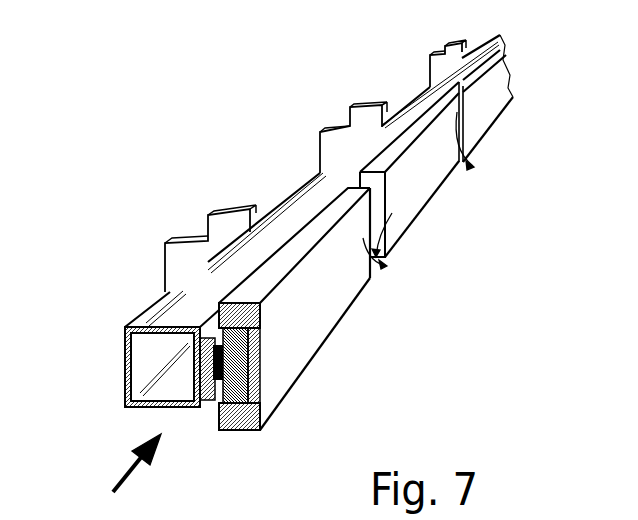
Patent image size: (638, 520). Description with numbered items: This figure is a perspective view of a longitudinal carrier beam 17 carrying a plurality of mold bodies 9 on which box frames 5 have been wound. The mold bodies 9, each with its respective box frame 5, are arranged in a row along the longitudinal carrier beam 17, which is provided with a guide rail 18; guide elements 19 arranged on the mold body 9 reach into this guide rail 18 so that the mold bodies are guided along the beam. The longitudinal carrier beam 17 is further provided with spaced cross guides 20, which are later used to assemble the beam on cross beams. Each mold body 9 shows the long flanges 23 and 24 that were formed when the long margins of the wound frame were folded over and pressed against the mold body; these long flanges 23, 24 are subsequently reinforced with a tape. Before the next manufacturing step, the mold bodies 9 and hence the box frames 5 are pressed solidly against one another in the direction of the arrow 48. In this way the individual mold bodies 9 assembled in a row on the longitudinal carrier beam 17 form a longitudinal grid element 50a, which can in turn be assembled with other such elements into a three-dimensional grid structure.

The box frame 5 is at (356, 301).
The mold body 9 is at (481, 93).
The longitudinal carrier beam 17 is at (296, 204).
The guide rail 18 is at (222, 380).
The guide element 19 is at (193, 372).
The cross guide 20 is at (172, 257).
The long flange 23 is at (417, 211).
The long flange 24 is at (292, 283).
The arrow 48 is at (118, 479).
The longitudinal grid element 50a is at (518, 63).